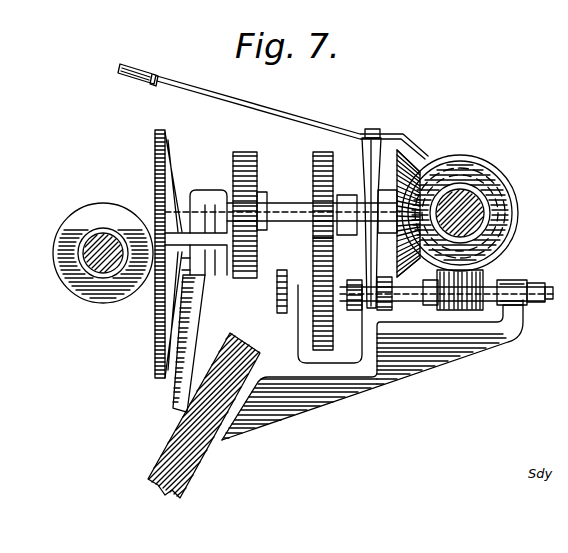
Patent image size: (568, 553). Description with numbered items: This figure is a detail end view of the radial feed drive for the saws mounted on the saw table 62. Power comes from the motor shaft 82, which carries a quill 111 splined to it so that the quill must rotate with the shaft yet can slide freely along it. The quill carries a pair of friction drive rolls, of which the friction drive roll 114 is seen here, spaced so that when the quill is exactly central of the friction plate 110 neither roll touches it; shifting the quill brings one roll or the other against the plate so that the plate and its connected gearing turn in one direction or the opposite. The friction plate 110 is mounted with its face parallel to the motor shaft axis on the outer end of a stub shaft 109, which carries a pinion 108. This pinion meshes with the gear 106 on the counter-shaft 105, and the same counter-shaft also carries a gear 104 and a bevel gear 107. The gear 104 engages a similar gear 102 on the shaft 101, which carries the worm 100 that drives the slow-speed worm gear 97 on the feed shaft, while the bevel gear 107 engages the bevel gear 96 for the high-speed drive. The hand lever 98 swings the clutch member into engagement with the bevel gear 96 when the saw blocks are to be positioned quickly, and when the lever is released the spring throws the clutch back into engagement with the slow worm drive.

The saw table 62 is at (198, 476).
The motor shaft 82 is at (105, 242).
The bevel gear 96 is at (478, 207).
The worm gear 97 is at (504, 172).
The hand lever 98 is at (296, 116).
The worm 100 is at (472, 311).
The shaft 101 is at (413, 302).
The gear 102 is at (323, 352).
The gear 104 is at (318, 152).
The counter-shaft 105 is at (286, 192).
The gear 106 is at (247, 152).
The bevel gear 107 is at (403, 152).
The pinion 108 is at (243, 283).
The stub shaft 109 is at (270, 270).
The friction plate 110 is at (155, 139).
The quill 111 is at (90, 232).
The friction drive roll 114 is at (102, 300).